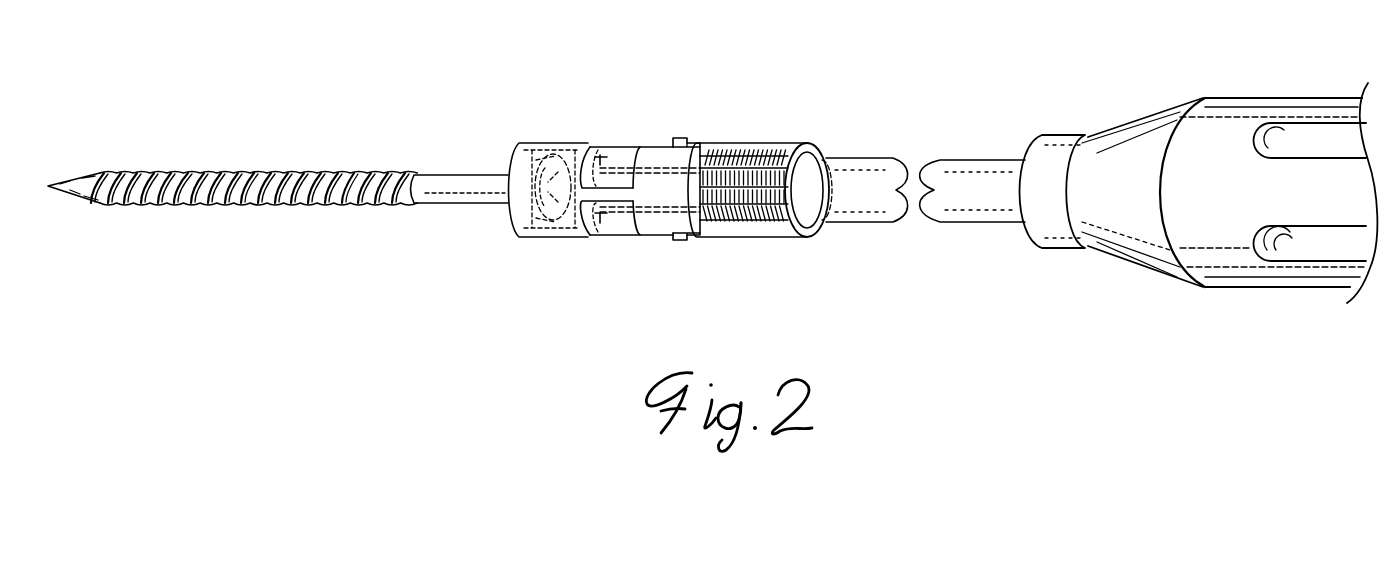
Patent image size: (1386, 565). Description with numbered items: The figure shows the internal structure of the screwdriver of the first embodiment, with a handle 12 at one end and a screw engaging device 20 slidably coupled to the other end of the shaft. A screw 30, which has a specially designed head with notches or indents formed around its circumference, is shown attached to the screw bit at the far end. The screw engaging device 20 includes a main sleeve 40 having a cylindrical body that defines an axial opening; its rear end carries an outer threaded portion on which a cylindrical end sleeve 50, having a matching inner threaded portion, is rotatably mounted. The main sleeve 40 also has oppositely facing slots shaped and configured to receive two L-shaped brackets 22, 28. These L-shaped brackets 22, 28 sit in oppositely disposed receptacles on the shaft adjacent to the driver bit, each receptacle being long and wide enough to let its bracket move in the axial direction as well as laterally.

The handle 12 is at (1285, 100).
The screw engaging device 20 is at (646, 111).
The L-shaped bracket 22 is at (625, 155).
The L-shaped bracket 28 is at (622, 222).
The screw 30 is at (307, 156).
The main sleeve 40 is at (577, 228).
The end sleeve 50 is at (760, 228).